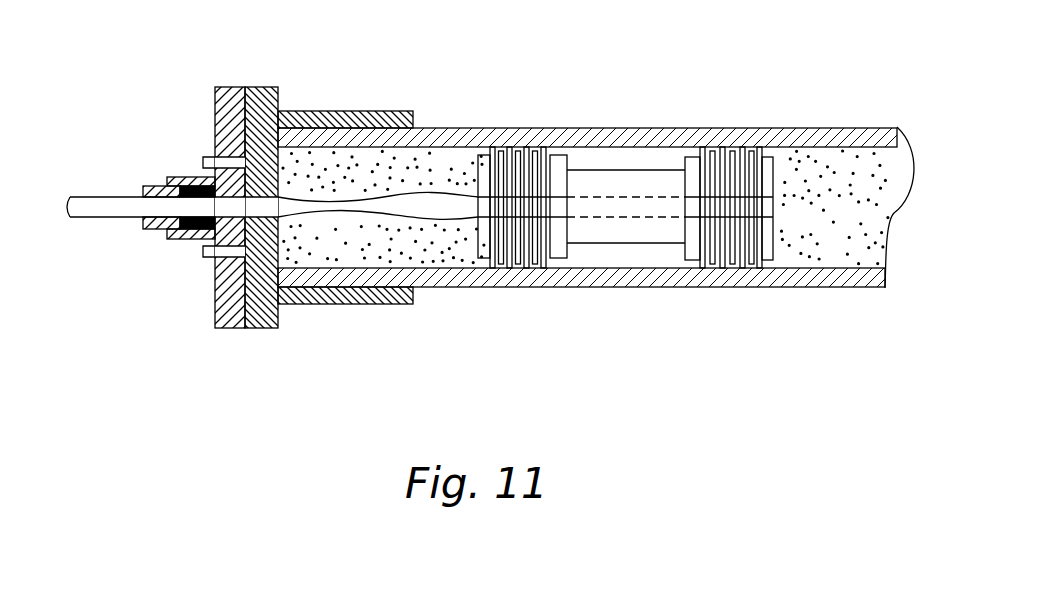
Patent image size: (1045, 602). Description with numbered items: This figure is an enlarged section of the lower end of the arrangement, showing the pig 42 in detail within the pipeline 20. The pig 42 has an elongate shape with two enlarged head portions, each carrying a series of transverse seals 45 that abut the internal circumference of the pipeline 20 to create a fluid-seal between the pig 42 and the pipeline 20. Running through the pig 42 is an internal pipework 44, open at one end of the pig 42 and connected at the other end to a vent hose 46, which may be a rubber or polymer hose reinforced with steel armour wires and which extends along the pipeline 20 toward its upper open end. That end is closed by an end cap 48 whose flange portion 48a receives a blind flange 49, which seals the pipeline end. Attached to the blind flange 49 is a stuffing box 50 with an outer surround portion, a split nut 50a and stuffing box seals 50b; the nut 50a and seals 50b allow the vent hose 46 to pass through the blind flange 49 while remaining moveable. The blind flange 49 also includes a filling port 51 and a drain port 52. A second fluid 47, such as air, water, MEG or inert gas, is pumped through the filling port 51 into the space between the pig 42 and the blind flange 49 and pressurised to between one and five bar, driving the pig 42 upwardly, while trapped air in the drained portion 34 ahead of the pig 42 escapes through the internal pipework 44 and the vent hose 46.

The pipeline 20 is at (500, 283).
The drained portion 34 is at (820, 247).
The pig 42 is at (641, 244).
The internal pipework 44 is at (608, 197).
The transverse seals 45 is at (743, 150).
The vent hose 46 is at (424, 212).
The second fluid 47 is at (455, 155).
The end cap 48 is at (322, 111).
The flange portion 48a is at (260, 87).
The blind flange 49 is at (232, 98).
The stuffing box 50 is at (155, 242).
The split nut 50a is at (143, 190).
The stuffing box seals 50b is at (167, 177).
The filling port 51 is at (203, 257).
The drain port 52 is at (208, 157).